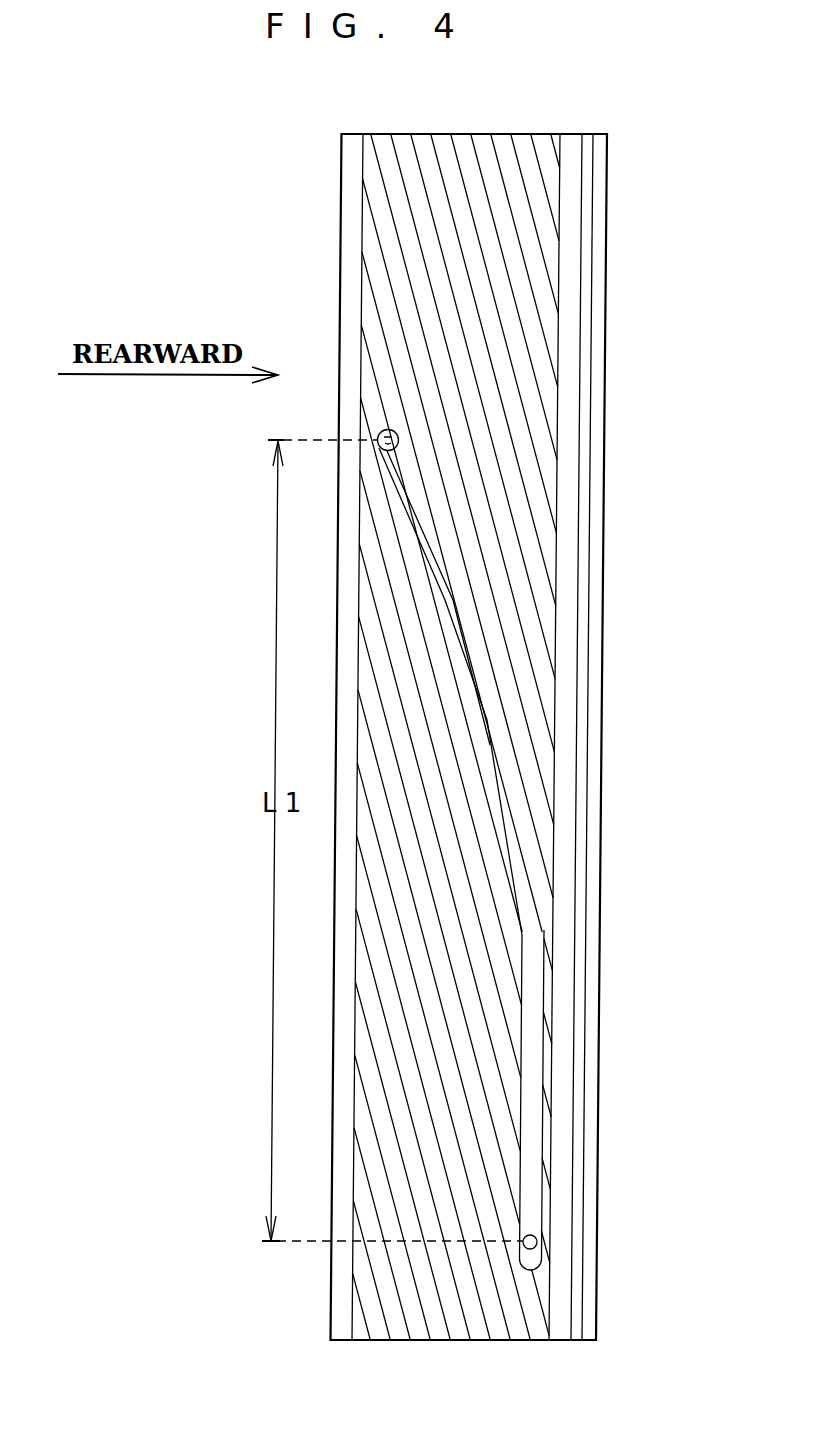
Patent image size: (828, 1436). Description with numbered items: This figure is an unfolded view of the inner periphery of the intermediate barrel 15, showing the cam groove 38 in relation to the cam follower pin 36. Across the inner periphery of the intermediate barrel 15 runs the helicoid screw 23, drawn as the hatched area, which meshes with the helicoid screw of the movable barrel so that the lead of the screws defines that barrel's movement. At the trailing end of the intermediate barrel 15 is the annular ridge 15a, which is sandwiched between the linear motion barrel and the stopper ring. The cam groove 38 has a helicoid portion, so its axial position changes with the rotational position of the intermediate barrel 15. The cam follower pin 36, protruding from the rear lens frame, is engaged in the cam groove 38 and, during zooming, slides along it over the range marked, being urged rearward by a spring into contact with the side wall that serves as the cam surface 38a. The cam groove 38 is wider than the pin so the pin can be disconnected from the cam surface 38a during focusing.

The intermediate barrel 15 is at (512, 108).
The annular ridge 15a is at (589, 150).
The helicoid screw 23 is at (445, 153).
The cam follower pin 36 is at (377, 438).
The cam groove 38 is at (493, 794).
The cam surface 38a is at (448, 638).